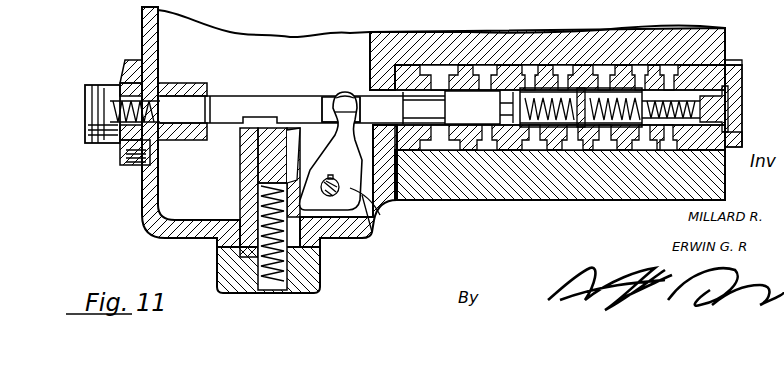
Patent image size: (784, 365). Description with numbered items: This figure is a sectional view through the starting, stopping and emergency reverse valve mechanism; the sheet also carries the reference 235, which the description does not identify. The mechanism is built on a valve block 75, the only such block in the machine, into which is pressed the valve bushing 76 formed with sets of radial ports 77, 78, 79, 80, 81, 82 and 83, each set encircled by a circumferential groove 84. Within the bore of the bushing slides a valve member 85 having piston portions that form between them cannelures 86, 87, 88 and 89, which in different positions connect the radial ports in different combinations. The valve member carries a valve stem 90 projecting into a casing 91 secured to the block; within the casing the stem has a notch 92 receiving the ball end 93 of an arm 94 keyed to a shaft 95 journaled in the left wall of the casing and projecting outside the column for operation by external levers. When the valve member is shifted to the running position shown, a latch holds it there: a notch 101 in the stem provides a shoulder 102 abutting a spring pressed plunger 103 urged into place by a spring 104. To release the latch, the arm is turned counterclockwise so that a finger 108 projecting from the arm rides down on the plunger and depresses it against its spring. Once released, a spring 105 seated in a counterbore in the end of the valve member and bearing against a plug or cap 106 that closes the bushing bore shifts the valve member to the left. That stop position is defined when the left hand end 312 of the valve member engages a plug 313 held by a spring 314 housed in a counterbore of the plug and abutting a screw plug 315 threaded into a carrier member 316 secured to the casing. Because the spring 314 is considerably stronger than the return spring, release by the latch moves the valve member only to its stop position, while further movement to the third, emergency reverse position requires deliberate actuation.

The valve body housing 235 is at (441, 18).
The valve block 75 is at (728, 50).
The valve bushing 76 is at (740, 63).
The radial ports 77 is at (458, 155).
The radial ports 78 is at (486, 155).
The radial ports 79 is at (532, 155).
The radial ports 80 is at (572, 155).
The radial ports 81 is at (612, 157).
The radial ports 82 is at (633, 97).
The radial ports 83 is at (668, 90).
The circumferential groove 84 is at (443, 155).
The valve member 85 is at (360, 93).
The cannelure 86 is at (462, 92).
The cannelure 87 is at (551, 96).
The cannelure 88 is at (580, 100).
The cannelure 89 is at (700, 88).
The valve stem 90 is at (305, 76).
The casing 91 is at (376, 234).
The notch 92 is at (320, 93).
The ball end 93 is at (340, 92).
The arm 94 is at (378, 208).
The shaft 95 is at (336, 196).
The notch 101 is at (250, 82).
The shoulder 102 is at (280, 117).
The spring pressed plunger 103 is at (258, 160).
The spring 104 is at (272, 286).
The spring 105 is at (742, 85).
The plug or cap 106 is at (742, 134).
The finger 108 is at (310, 155).
The left hand end 312 is at (206, 85).
The plug 313 is at (165, 140).
The spring 314 is at (115, 150).
The screw plug 315 is at (98, 82).
The carrier member 316 is at (137, 60).